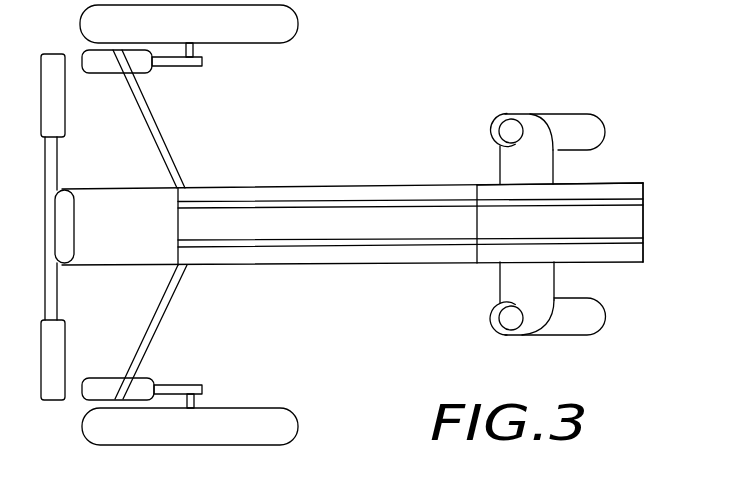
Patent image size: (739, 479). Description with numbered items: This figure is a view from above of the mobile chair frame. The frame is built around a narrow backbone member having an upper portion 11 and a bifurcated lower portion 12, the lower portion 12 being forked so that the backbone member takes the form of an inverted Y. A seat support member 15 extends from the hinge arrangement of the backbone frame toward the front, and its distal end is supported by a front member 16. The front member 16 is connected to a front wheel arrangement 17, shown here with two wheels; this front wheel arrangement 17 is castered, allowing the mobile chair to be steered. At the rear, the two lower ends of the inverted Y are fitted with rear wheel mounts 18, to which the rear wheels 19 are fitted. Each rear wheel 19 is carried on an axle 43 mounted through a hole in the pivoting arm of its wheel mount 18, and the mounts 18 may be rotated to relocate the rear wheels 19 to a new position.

The upper portion 11 is at (90, 207).
The bifurcated lower portion 12 is at (168, 307).
The seat support member 15 is at (380, 266).
The front member 16 is at (641, 222).
The front wheel arrangement 17 is at (568, 179).
The rear wheel mount 18 is at (98, 68).
The rear wheel 19 is at (260, 32).
The axle 43 is at (198, 48).